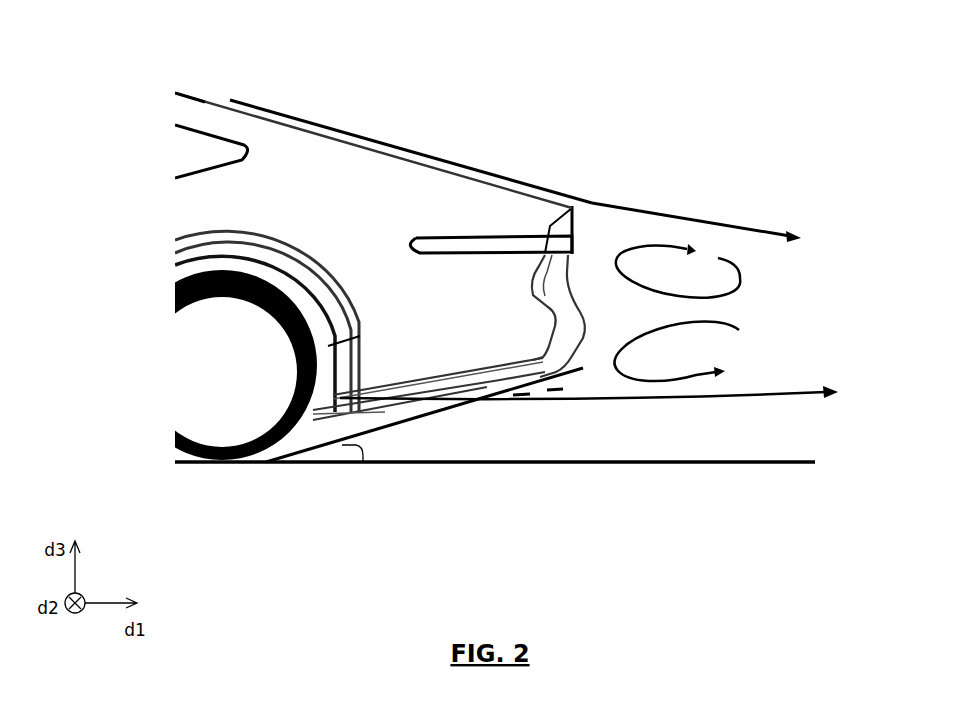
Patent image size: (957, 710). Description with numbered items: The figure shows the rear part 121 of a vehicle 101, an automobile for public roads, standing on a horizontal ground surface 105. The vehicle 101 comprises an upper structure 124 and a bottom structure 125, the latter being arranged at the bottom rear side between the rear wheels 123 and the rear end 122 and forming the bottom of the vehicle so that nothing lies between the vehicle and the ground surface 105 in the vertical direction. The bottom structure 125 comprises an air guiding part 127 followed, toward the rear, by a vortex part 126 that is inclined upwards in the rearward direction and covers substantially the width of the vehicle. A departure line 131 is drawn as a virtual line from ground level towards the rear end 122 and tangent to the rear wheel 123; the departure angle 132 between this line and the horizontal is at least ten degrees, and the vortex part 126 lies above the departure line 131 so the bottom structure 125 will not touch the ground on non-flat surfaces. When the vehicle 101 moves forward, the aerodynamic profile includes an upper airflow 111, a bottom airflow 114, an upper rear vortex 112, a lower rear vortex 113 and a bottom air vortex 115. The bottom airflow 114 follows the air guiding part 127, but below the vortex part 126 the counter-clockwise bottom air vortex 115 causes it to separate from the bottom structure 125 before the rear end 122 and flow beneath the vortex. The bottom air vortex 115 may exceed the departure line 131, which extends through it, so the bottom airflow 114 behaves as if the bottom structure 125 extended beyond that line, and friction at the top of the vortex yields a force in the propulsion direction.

The vehicle 101 is at (264, 47).
The ground surface 105 is at (752, 468).
The upper airflow 111 is at (679, 212).
The upper rear vortex 112 is at (738, 266).
The lower rear vortex 113 is at (747, 331).
The bottom airflow 114 is at (795, 390).
The bottom air vortex 115 is at (553, 385).
The rear part 121 is at (363, 188).
The rear end 122 is at (590, 331).
The rear wheel 123 is at (193, 356).
The upper structure 124 is at (452, 175).
The bottom structure 125 is at (433, 358).
The vortex part 126 is at (491, 379).
The air guiding part 127 is at (393, 408).
The departure line 131 is at (390, 428).
The departure angle 132 is at (363, 456).